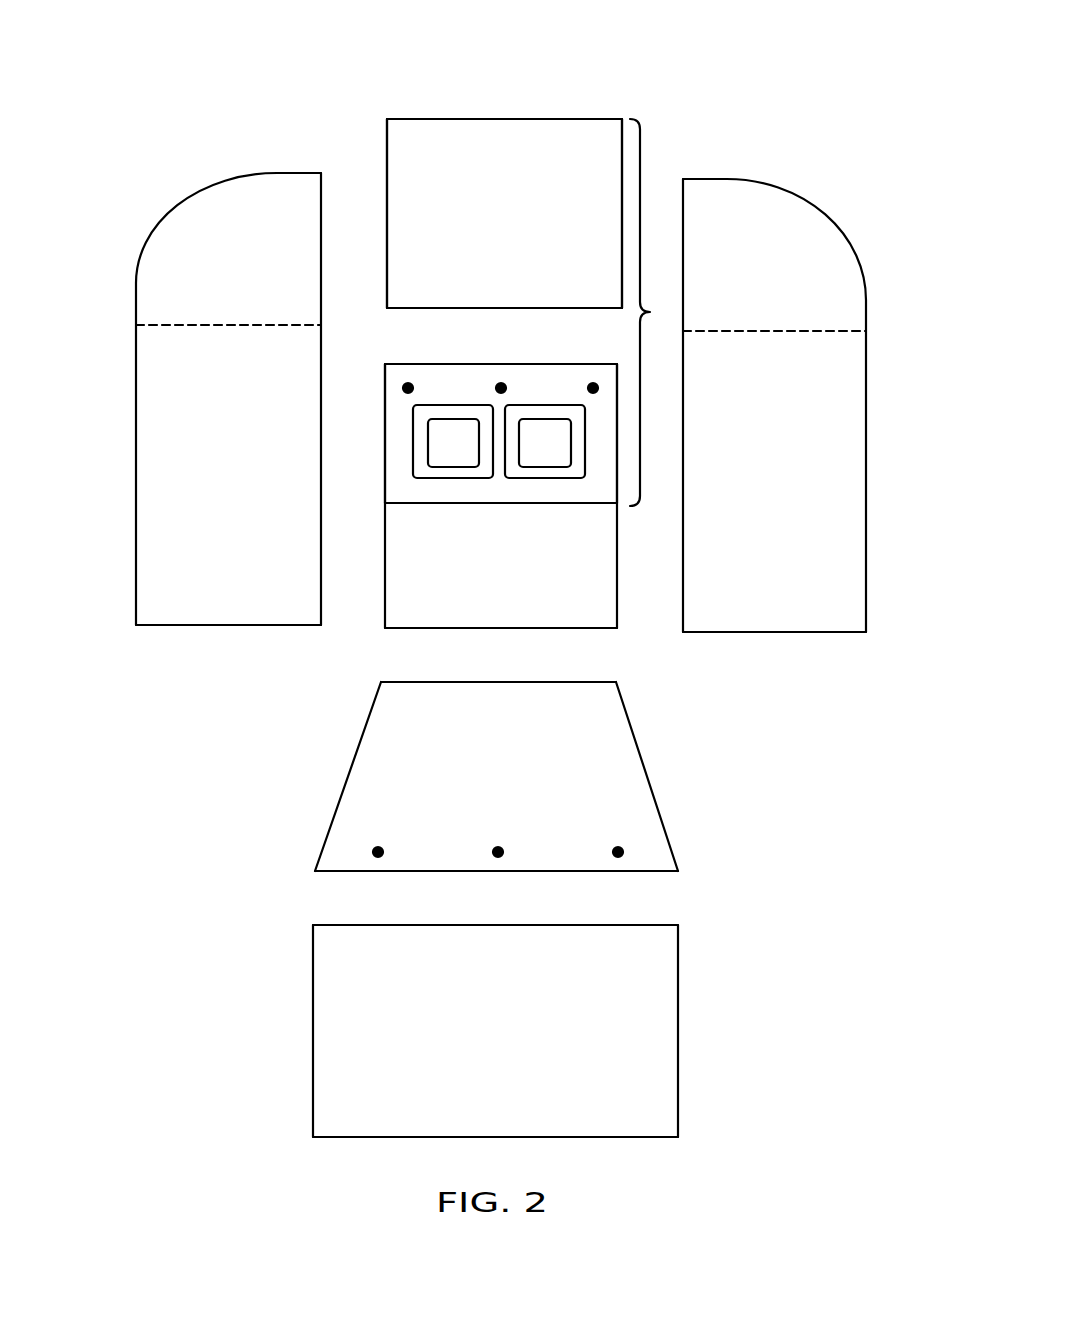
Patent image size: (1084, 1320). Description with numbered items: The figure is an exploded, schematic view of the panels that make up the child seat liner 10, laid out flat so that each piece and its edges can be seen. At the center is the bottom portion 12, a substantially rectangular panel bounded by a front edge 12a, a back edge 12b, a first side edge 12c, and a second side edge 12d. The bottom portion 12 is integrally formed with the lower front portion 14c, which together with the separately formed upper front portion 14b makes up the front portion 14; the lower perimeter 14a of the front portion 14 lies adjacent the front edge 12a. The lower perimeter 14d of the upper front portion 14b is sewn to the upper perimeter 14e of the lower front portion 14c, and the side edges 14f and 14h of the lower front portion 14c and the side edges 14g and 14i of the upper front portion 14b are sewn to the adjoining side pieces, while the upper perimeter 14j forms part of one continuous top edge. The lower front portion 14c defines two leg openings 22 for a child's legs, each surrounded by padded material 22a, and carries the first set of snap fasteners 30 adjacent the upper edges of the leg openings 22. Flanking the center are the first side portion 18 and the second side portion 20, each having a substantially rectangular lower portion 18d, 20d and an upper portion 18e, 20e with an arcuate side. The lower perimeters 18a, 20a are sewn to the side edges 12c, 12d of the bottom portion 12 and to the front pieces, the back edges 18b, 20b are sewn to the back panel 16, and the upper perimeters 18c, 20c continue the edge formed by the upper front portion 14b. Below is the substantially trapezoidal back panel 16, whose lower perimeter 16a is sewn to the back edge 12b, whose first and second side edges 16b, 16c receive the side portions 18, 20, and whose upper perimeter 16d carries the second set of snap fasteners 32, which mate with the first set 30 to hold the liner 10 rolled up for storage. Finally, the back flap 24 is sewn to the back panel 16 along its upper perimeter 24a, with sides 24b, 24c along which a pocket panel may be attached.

The child seat liner 10 is at (716, 91).
The bottom portion 12 is at (601, 605).
The front edge of the bottom portion 12a is at (498, 506).
The back edge of the bottom portion 12b is at (470, 628).
The first side edge of the bottom portion 12c is at (617, 558).
The second side edge of the bottom portion 12d is at (385, 557).
The front portion 14 is at (502, 288).
The lower perimeter of the front portion 14a is at (413, 503).
The upper front portion 14b is at (569, 132).
The lower front portion 14c is at (465, 380).
The lower perimeter of the upper front portion 14d is at (500, 308).
The upper perimeter of the lower front portion 14e is at (393, 362).
The first side edge of the lower front portion 14f is at (617, 477).
The first side edge of the upper front portion 14g is at (622, 222).
The second side edge of the lower front portion 14h is at (385, 385).
The second side edge of the upper front portion 14i is at (387, 222).
The upper perimeter of the upper front portion 14j is at (497, 120).
The back panel 16 is at (630, 760).
The lower perimeter of the back panel 16a is at (493, 682).
The first side edge of the back panel 16b is at (652, 795).
The second side edge of the back panel 16c is at (355, 758).
The upper perimeter of the back panel 16d is at (462, 871).
The first side portion 18 is at (860, 396).
The lower perimeter of the first side portion 18a is at (683, 520).
The back edge of the first side portion 18b is at (770, 632).
The upper perimeter of the first side portion 18c is at (728, 180).
The lower portion of the first side portion 18d is at (860, 506).
The upper portion of the first side portion 18e is at (848, 250).
The second side portion 20 is at (145, 390).
The lower perimeter of the second side portion 20a is at (320, 507).
The back edge of the second side portion 20b is at (226, 625).
The upper perimeter of the second side portion 20c is at (273, 175).
The lower portion of the second side portion 20d is at (145, 496).
The upper portion of the second side portion 20e is at (160, 243).
The leg openings 22 is at (446, 430).
The padded material 22a is at (555, 416).
The back flap 24 is at (670, 978).
The upper perimeter of the back flap 24a is at (497, 925).
The first side of the back flap 24b is at (678, 1048).
The second side of the back flap 24c is at (313, 1048).
The first set of snap fasteners 30 is at (410, 386).
The second set of snap fasteners 32 is at (378, 852).